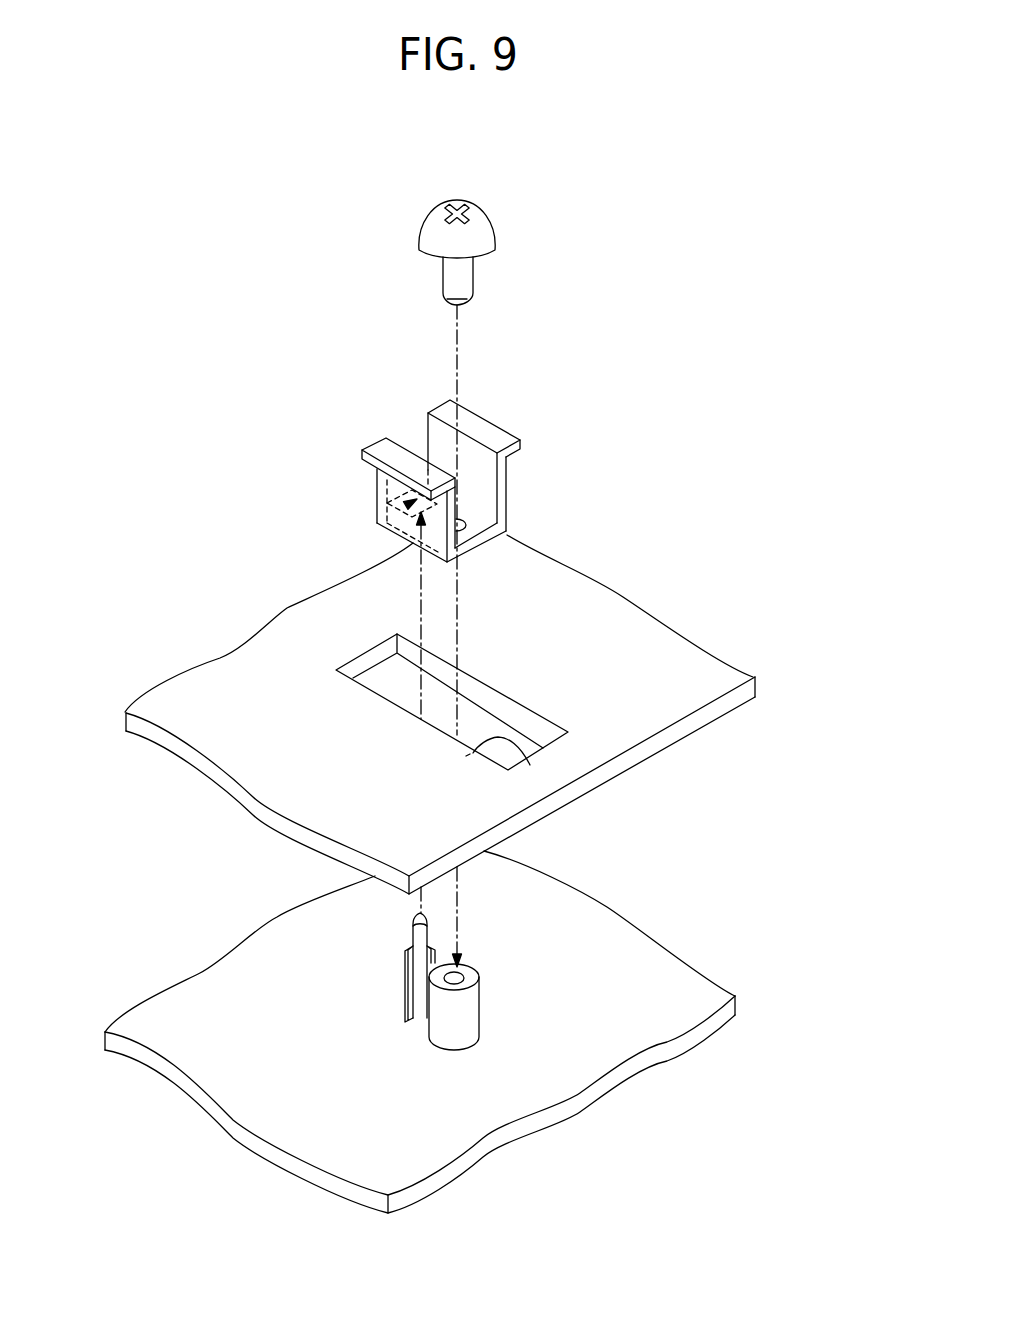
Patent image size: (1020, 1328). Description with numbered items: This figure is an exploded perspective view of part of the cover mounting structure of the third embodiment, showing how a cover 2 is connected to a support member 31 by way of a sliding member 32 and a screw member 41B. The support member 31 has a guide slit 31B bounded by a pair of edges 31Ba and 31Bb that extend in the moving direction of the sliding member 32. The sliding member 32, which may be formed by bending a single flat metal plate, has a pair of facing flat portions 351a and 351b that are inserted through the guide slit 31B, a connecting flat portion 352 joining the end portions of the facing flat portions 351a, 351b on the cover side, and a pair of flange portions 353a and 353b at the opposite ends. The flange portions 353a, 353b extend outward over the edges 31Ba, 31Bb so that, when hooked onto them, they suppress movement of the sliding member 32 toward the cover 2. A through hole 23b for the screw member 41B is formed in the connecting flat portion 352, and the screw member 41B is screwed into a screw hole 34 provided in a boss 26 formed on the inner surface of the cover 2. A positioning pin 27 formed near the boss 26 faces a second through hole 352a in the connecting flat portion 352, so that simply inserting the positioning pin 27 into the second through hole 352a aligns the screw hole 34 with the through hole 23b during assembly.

The screw member 41B is at (466, 274).
The sliding member 32 is at (445, 456).
The facing flat portion 351a is at (377, 496).
The facing flat portion 351b is at (441, 435).
The connecting flat portion 352 is at (490, 552).
The second through hole 352a is at (387, 522).
The flange portion 353a is at (383, 450).
The flange portion 353b is at (485, 427).
The through hole 23b is at (463, 521).
The support member 31 is at (446, 714).
The guide slit 31B is at (544, 702).
The edge 31Ba is at (530, 765).
The edge 31Bb is at (528, 738).
The cover 2 is at (420, 1032).
The positioning pin 27 is at (413, 938).
The boss 26 is at (468, 1005).
The screw hole 34 is at (463, 972).